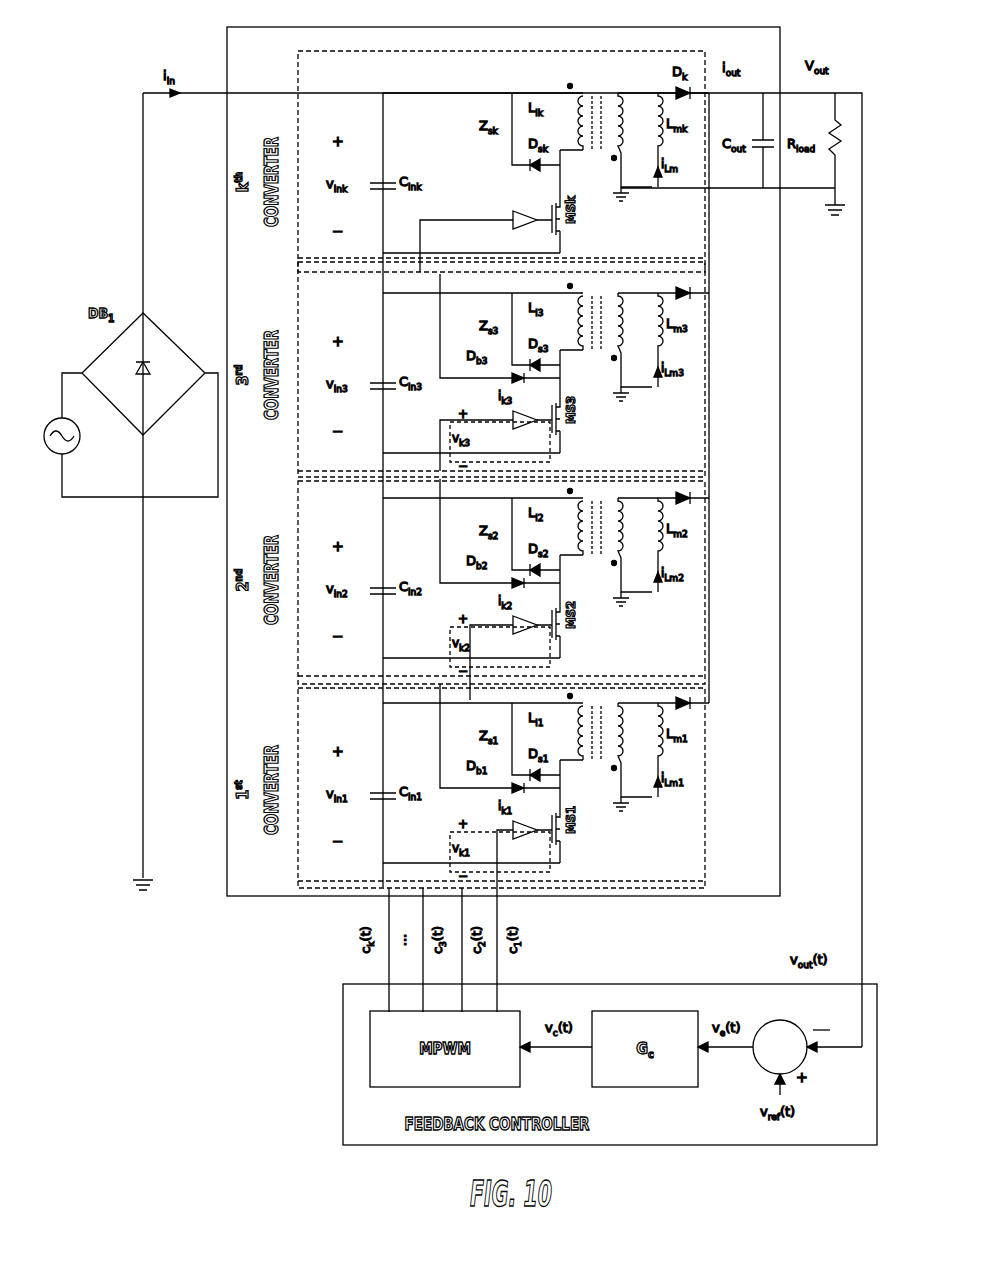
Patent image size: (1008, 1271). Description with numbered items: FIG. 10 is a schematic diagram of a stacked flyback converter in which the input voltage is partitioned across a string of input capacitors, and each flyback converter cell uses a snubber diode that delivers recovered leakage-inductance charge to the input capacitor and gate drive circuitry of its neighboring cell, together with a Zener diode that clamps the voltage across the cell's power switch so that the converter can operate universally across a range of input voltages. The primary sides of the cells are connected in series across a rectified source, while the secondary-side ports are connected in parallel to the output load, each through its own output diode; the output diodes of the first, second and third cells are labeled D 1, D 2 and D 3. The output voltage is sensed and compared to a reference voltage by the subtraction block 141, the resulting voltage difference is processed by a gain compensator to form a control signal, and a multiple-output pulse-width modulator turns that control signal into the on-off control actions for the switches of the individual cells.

The subtraction block 141 is at (780, 1047).
The output diode D1 of first converter 1 is at (705, 705).
The output diode D2 of second converter 2 is at (705, 500).
The output diode D3 of third converter 3 is at (705, 295).